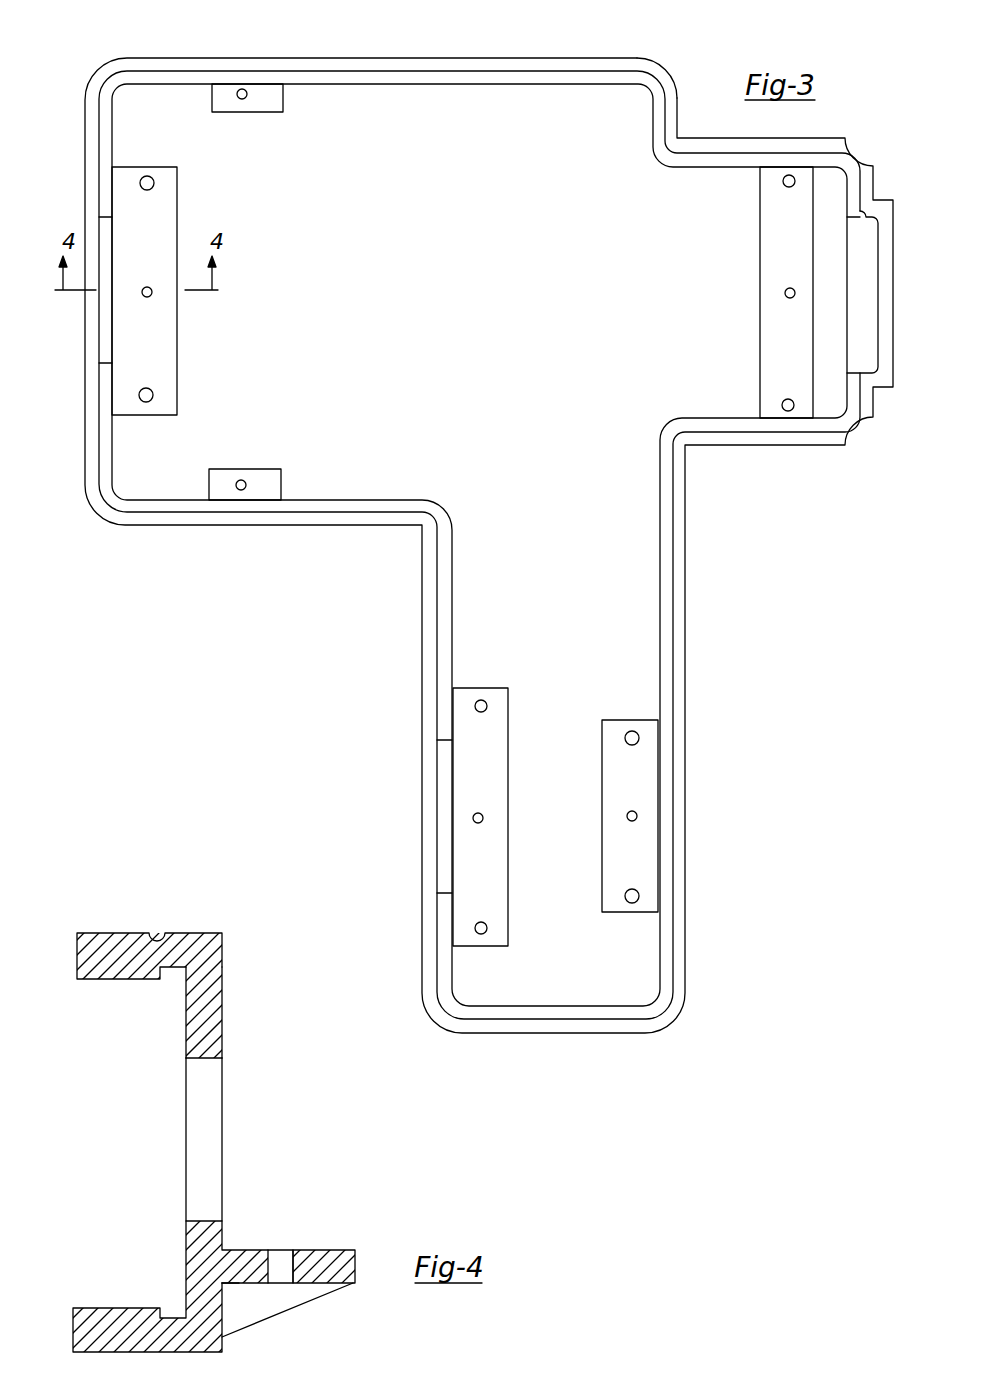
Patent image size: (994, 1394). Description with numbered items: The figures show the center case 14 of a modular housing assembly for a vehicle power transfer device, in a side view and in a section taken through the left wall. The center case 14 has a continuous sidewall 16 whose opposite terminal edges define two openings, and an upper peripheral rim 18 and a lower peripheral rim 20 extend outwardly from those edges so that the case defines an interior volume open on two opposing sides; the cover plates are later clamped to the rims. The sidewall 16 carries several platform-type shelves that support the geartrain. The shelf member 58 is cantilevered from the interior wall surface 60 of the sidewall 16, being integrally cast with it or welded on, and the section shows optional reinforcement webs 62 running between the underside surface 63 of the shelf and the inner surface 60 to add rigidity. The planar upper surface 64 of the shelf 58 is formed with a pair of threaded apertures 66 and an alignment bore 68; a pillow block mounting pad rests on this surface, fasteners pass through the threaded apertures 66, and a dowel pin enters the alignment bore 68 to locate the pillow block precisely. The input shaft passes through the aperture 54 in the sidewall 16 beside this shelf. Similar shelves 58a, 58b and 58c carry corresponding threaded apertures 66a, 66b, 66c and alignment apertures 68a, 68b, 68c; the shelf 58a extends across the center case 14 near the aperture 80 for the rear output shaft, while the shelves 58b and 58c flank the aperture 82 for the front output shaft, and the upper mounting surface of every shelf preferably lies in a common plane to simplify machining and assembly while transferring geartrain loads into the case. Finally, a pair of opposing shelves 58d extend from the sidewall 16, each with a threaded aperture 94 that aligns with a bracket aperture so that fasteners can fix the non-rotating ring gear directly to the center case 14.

In FIG. 3, the center case 14 is at (460, 517).
In FIG. 4, the center case 14 is at (202, 1101).
In FIG. 3, the sidewall 16 is at (453, 80).
In FIG. 4, the sidewall 16 is at (208, 995).
In FIG. 4, the upper peripheral rim 18 is at (100, 948).
In FIG. 3, the lower peripheral rim 20 is at (668, 83).
In FIG. 4, the lower peripheral rim 20 is at (113, 1313).
In FIG. 3, the aperture 54 is at (108, 363).
In FIG. 4, the aperture 54 is at (205, 1058).
In FIG. 3, the shelf member 58 is at (167, 197).
In FIG. 4, the shelf member 58 is at (333, 1263).
In FIG. 3, the shelf 58a is at (772, 205).
In FIG. 3, the shelf 58b is at (647, 843).
In FIG. 3, the shelf 58c is at (505, 855).
In FIG. 3, the opposing shelves 58d is at (279, 98).
In FIG. 3, the interior wall surface 60 is at (397, 505).
In FIG. 4, the interior wall surface 60 is at (222, 1030).
In FIG. 4, the reinforcement web 62 is at (278, 1305).
In FIG. 4, the underside surface 63 is at (238, 1287).
In FIG. 4, the upper surface 64 is at (238, 1248).
In FIG. 3, the threaded apertures 66 is at (147, 176).
In FIG. 3, the threaded apertures 66a is at (795, 178).
In FIG. 3, the threaded apertures 66b is at (638, 733).
In FIG. 3, the threaded apertures 66c is at (487, 706).
In FIG. 3, the alignment bore 68 is at (150, 297).
In FIG. 4, the alignment bore 68 is at (284, 1265).
In FIG. 3, the dowel bore 68a is at (785, 297).
In FIG. 3, the alignment aperture 68b is at (634, 811).
In FIG. 3, the alignment aperture 68c is at (482, 814).
In FIG. 3, the aperture 80 is at (853, 222).
In FIG. 3, the aperture 82 is at (443, 892).
In FIG. 3, the threaded aperture 94 is at (244, 100).